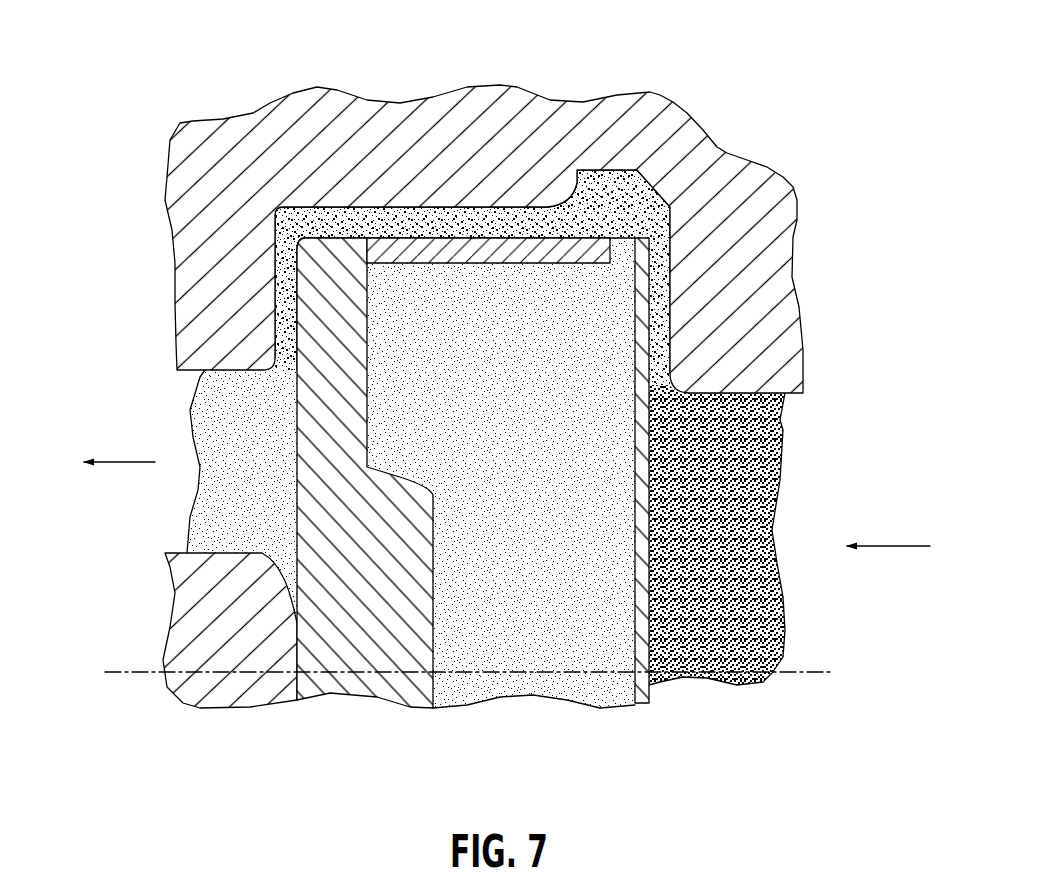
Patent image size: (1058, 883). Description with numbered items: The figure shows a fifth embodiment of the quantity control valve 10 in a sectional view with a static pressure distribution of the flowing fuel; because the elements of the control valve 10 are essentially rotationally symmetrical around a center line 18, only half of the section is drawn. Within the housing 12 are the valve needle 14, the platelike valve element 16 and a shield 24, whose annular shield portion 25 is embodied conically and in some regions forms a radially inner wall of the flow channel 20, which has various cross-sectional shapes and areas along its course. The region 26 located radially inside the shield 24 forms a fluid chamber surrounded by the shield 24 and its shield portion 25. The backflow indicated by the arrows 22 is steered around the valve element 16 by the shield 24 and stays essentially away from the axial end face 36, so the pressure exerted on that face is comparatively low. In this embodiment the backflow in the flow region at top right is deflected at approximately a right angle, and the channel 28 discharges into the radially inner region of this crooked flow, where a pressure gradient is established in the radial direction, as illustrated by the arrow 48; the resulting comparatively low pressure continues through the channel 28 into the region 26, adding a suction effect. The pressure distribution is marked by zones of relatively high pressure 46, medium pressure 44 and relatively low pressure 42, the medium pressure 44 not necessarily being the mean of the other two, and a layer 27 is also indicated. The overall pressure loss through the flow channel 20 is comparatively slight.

The quantity control valve 10 is at (775, 80).
The housing 12 is at (215, 178).
The valve needle 14 is at (227, 622).
The platelike valve element 16 is at (355, 630).
The center line 18 is at (833, 672).
The flow channel 20 is at (468, 197).
The arrows 22 is at (122, 462).
The shield 24 is at (656, 553).
The annular shield portion 25 is at (410, 250).
The region 26 is at (592, 470).
The layer 27 is at (363, 221).
The channel 28 is at (643, 261).
The axial end face 36 is at (367, 403).
The relatively low pressure 42 is at (623, 242).
The medium pressure 44 is at (437, 218).
The relatively high pressure 46 is at (728, 432).
The arrow 48 is at (648, 193).